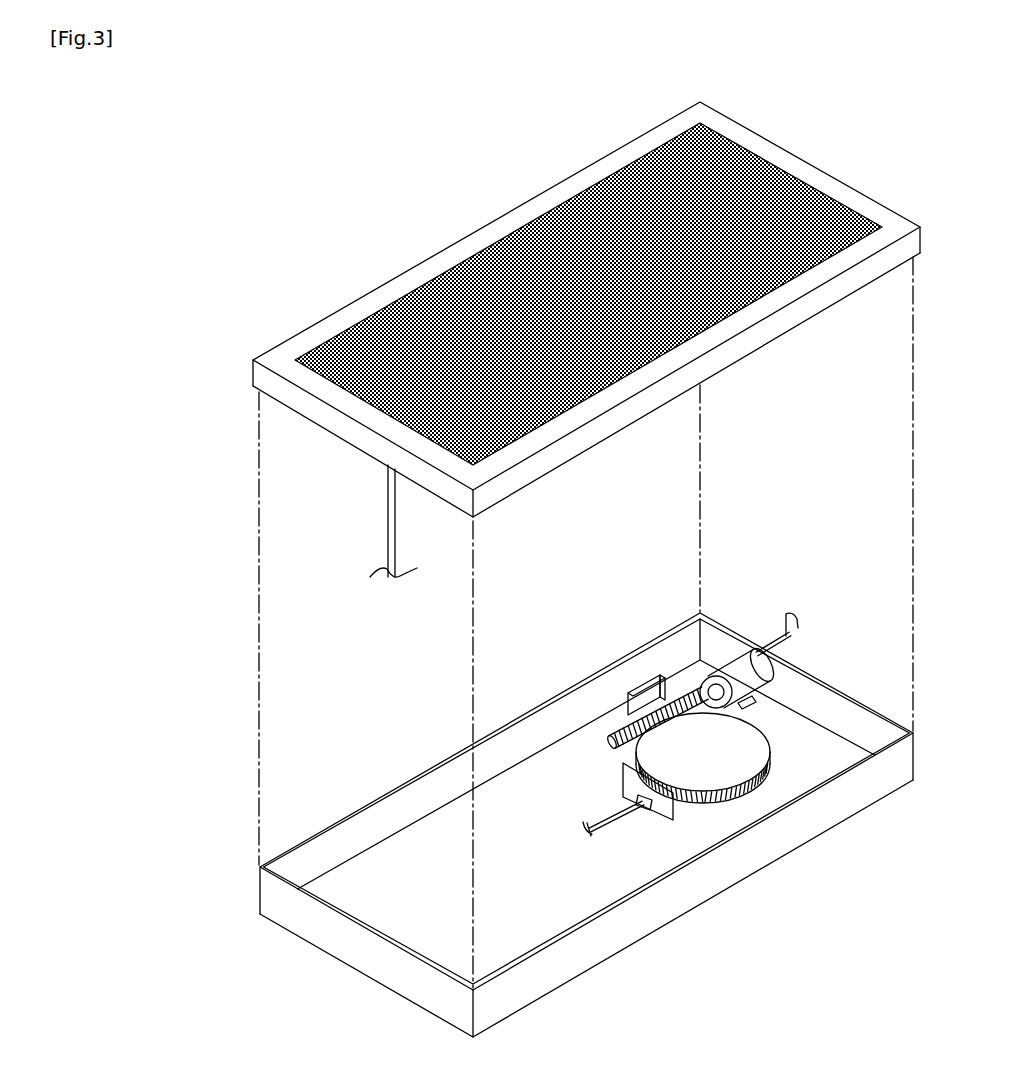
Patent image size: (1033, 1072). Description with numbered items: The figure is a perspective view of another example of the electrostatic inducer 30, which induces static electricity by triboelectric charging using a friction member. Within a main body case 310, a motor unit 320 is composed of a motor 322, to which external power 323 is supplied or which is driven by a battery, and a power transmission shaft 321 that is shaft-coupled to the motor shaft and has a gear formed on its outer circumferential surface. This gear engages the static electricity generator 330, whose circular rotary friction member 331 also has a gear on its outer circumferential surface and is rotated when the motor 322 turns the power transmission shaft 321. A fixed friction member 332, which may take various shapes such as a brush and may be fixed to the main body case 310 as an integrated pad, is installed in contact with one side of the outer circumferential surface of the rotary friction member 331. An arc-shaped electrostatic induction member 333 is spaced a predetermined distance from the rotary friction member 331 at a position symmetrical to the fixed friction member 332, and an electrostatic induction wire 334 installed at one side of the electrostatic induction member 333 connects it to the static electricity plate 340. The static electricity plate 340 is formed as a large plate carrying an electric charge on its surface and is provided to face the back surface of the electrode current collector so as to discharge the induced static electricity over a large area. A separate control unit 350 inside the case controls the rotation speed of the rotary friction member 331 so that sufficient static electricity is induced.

The electrostatic inducer 30 is at (92, 127).
The main body case 310 is at (308, 898).
The motor unit 320 is at (805, 537).
The power transmission shaft 321 is at (677, 696).
The motor 322 is at (758, 648).
The external power 323 is at (797, 636).
The static electricity generator 330 is at (880, 902).
The rotary friction member 331 is at (735, 770).
The fixed friction member 332 is at (779, 748).
The electrostatic induction member 333 is at (665, 806).
The electrostatic induction wire 334 is at (387, 512).
The static electricity plate 340 is at (543, 258).
The control unit 350 is at (650, 698).